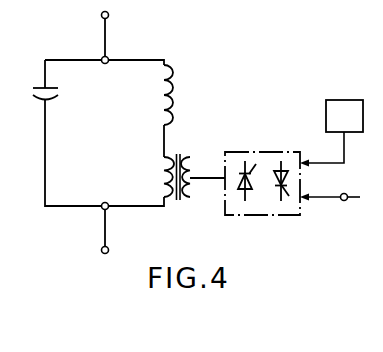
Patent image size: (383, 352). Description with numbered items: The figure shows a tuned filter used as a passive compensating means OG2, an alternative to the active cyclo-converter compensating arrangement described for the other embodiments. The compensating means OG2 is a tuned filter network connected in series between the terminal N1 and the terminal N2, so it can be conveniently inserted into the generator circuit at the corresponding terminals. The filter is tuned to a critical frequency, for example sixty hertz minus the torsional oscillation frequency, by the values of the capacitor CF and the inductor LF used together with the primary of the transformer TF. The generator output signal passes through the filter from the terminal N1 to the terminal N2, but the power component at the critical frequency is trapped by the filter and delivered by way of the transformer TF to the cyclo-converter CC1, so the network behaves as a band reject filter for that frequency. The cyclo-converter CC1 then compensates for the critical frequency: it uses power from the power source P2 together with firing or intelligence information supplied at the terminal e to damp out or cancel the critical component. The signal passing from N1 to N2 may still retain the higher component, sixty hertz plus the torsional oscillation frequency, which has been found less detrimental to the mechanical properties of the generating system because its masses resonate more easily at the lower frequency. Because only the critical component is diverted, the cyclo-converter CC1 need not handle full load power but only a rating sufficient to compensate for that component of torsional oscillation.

The terminal N1 is at (100, 16).
The terminal N2 is at (101, 250).
The compensating means OG2 is at (129, 132).
The capacitor CF is at (59, 99).
The inductor LF is at (162, 96).
The transformer TF is at (218, 138).
The cyclo-converter CC1 is at (262, 152).
The power source P2 is at (331, 133).
The terminal e is at (336, 196).